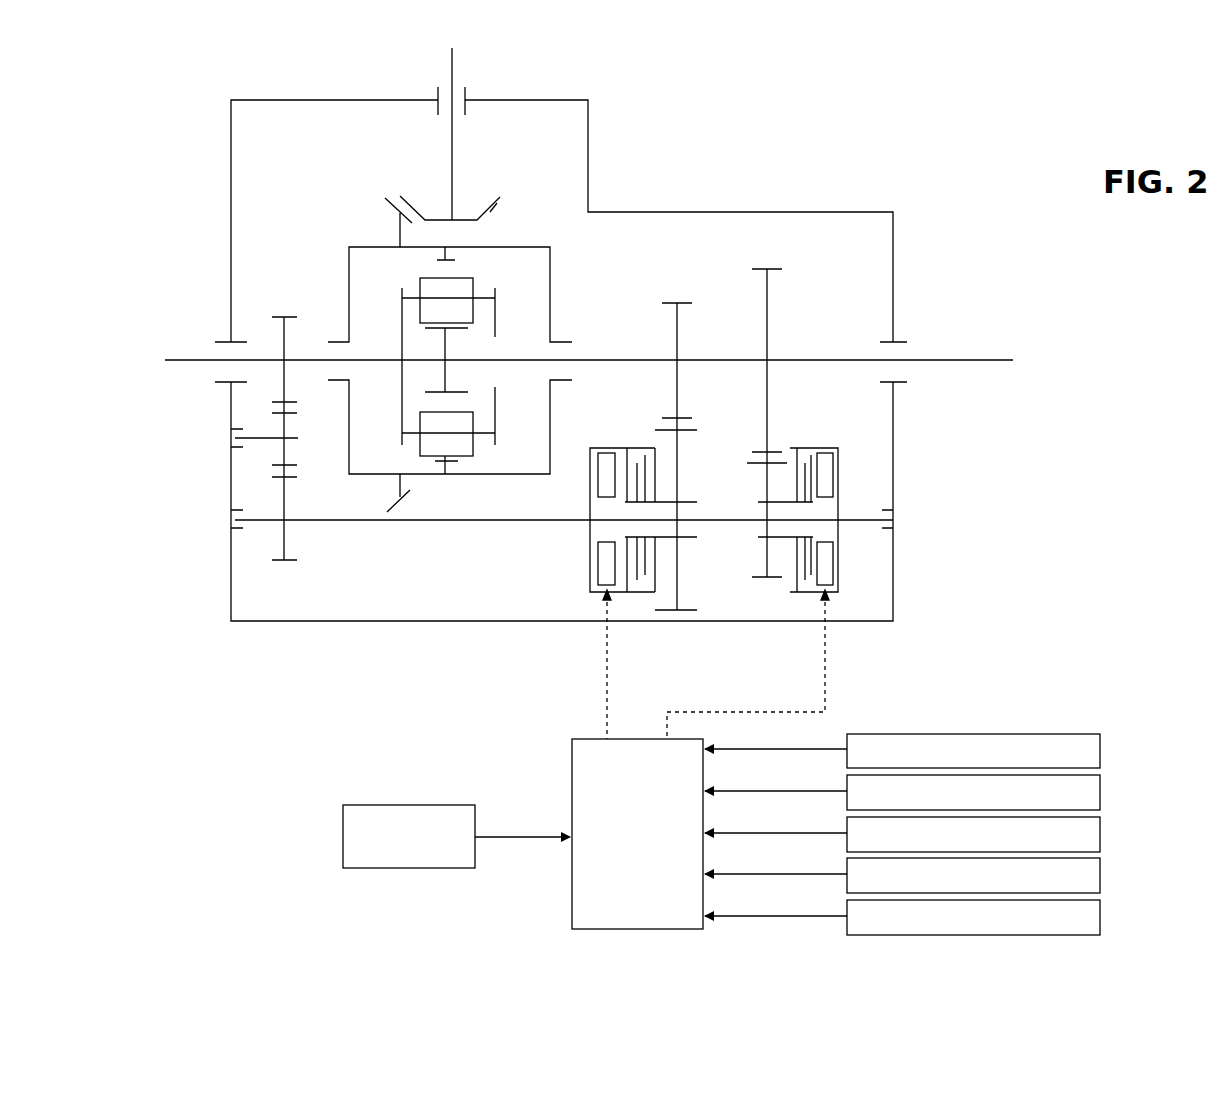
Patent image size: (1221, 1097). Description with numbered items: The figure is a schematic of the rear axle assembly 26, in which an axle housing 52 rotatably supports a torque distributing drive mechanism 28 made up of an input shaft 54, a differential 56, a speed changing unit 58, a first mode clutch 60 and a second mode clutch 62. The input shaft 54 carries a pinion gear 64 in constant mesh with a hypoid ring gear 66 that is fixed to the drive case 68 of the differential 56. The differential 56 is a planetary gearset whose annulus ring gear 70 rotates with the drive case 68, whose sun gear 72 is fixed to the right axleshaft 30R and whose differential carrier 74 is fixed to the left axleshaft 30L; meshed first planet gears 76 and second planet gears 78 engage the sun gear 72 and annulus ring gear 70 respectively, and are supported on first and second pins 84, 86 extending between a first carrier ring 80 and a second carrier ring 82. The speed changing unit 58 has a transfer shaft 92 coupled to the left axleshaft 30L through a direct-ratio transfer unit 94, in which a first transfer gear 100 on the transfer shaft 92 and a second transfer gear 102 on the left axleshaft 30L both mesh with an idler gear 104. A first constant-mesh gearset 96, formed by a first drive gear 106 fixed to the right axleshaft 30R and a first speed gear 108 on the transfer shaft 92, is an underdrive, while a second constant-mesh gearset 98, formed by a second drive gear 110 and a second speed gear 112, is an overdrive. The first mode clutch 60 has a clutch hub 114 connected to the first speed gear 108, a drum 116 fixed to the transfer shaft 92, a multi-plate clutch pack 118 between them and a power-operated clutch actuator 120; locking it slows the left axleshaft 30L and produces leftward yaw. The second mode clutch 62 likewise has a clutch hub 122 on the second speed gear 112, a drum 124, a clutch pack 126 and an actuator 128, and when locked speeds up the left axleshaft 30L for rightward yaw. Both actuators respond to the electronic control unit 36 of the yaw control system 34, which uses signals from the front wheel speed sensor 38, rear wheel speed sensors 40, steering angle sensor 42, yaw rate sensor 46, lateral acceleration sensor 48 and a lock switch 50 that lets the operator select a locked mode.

The rear axle assembly 26 is at (957, 72).
The torque distributing drive mechanism 28 is at (808, 120).
The left axleshaft 30L is at (193, 356).
The right axleshaft 30R is at (985, 358).
The yaw control system 34 is at (530, 891).
The electronic control unit 36 is at (585, 768).
The front wheel speed sensor 38 is at (1097, 745).
The rear wheel speed sensors 40 is at (1097, 788).
The steering angle sensor 42 is at (1097, 830).
The yaw rate sensor 46 is at (1097, 873).
The lateral acceleration sensor 48 is at (1097, 915).
The lock switch 50 is at (355, 822).
The axle housing 52 is at (893, 238).
The input shaft 54 is at (456, 62).
The differential 56 is at (565, 254).
The speed changing unit 58 is at (716, 302).
The first mode clutch 60 is at (580, 573).
The second mode clutch 62 is at (851, 573).
The pinion gear 64 is at (497, 212).
The hypoid ring gear 66 is at (407, 492).
The drive case 68 is at (552, 270).
The annulus ring gear 70 is at (455, 262).
The sun gear 72 is at (445, 373).
The differential carrier 74 is at (400, 325).
The first planet gears 76 is at (435, 290).
The second planet gears 78 is at (463, 447).
The first carrier ring 80 is at (400, 380).
The second carrier ring 82 is at (497, 415).
The first pins 84 is at (495, 305).
The second pins 86 is at (495, 437).
The transfer shaft 92 is at (477, 520).
The transfer unit 94 is at (245, 543).
The first constant-mesh gearset 96 is at (706, 428).
The second constant-mesh gearset 98 is at (775, 445).
The first transfer gear 100 is at (290, 562).
The second transfer gear 102 is at (292, 317).
The idler gear 104 is at (292, 466).
The first drive gear 106 is at (677, 303).
The first speed gear 108 is at (682, 612).
The second drive gear 110 is at (767, 298).
The second speed gear 112 is at (770, 577).
The clutch hub 114 is at (663, 540).
The drum 116 is at (595, 448).
The multi-plate clutch pack 118 is at (635, 585).
The power-operated clutch actuator 120 is at (602, 487).
The clutch hub 122 is at (758, 540).
The drum 124 is at (832, 437).
The multi-plate clutch pack 126 is at (800, 452).
The power-operated clutch actuator 128 is at (827, 553).